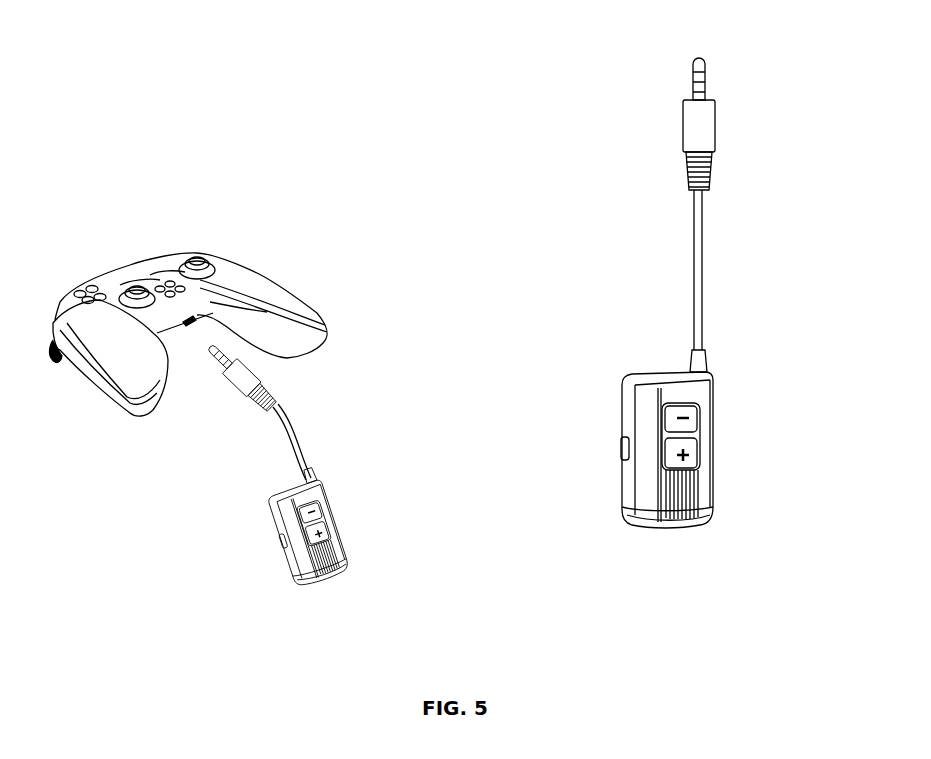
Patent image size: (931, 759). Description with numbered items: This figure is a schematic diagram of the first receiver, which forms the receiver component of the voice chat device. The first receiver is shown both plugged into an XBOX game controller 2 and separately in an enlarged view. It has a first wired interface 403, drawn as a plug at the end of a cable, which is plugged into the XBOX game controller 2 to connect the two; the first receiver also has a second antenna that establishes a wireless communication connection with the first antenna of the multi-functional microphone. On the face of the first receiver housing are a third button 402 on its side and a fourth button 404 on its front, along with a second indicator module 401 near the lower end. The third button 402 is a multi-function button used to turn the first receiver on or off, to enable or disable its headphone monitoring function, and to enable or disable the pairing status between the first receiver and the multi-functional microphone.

The XBOX game controller 2 is at (284, 292).
The second indicator module 401 is at (673, 525).
The third button 402 is at (621, 438).
The first wired interface 403 is at (700, 110).
The fourth button 404 is at (703, 471).